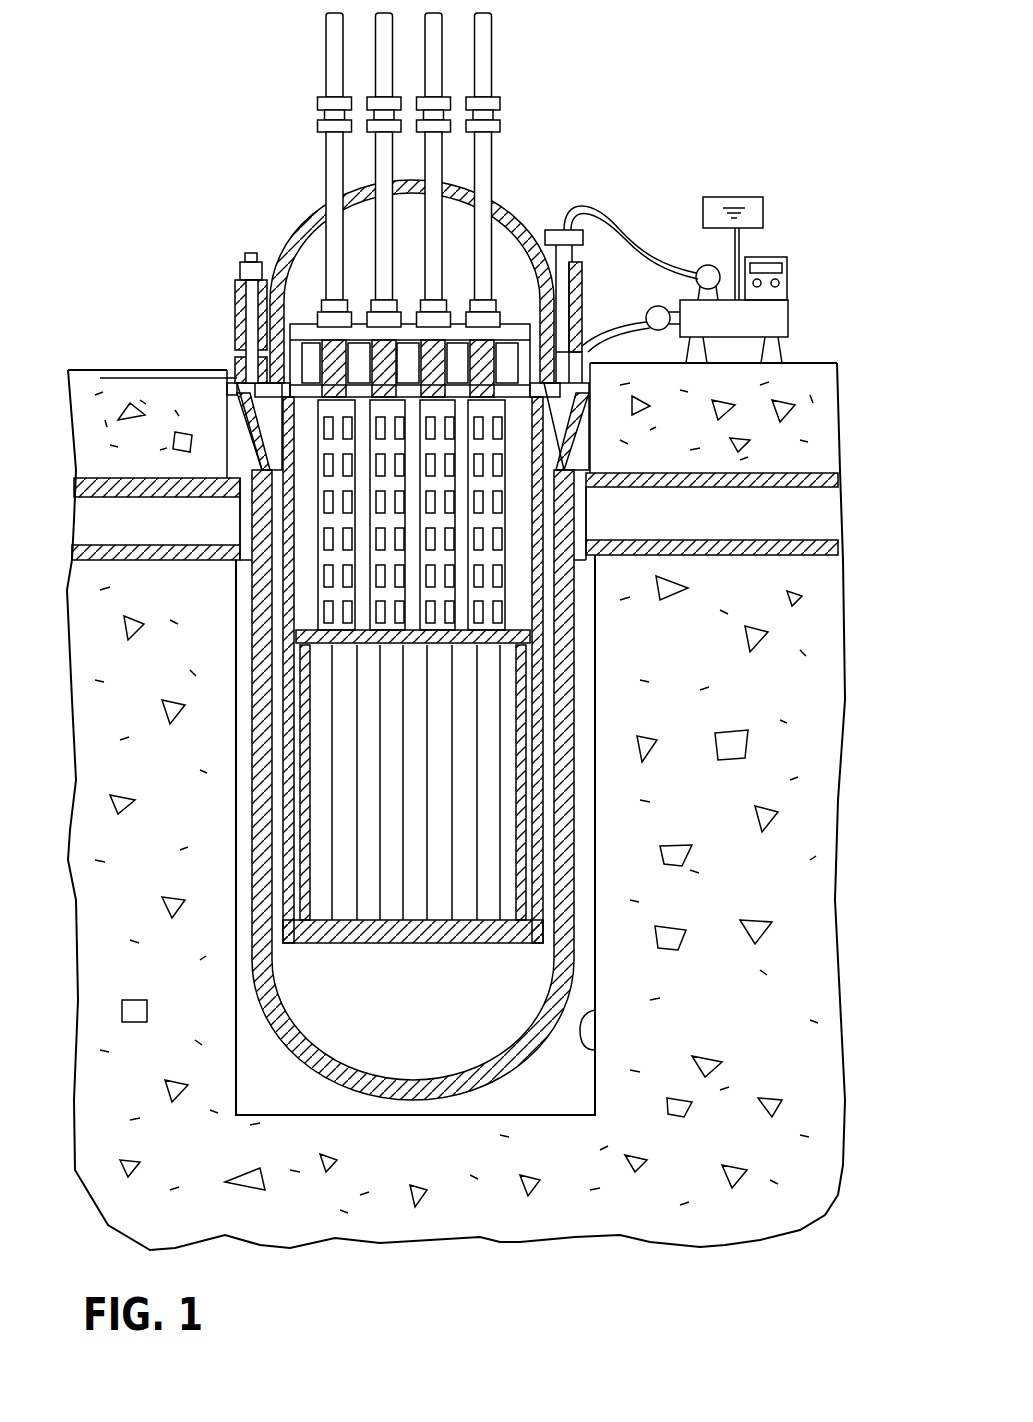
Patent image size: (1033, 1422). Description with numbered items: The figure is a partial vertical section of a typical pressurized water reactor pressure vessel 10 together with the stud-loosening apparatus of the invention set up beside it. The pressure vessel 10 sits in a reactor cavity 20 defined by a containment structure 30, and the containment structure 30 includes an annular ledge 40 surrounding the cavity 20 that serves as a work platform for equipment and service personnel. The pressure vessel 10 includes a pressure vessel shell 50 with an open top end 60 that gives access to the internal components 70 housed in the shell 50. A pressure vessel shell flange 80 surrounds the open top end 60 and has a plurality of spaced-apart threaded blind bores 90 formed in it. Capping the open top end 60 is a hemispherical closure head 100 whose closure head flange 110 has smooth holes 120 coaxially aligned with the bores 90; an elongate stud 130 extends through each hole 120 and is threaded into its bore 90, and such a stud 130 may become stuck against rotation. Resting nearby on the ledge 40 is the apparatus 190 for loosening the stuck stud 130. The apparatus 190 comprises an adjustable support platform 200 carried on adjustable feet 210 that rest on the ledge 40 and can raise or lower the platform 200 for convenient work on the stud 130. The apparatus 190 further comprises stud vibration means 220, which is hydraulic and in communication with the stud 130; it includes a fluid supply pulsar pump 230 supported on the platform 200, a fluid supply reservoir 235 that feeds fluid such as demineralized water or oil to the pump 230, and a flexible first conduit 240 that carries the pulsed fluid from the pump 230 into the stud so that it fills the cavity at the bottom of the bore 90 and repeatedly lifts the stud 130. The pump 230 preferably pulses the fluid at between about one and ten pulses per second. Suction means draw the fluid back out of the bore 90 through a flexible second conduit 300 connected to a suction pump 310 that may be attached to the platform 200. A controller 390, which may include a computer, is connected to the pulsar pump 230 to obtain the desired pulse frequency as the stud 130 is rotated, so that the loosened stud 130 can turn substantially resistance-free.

The nuclear reactor pressure vessel 10 is at (688, 64).
The reactor cavity 20 is at (603, 1040).
The containment structure 30 is at (795, 785).
The annular ledge 40 is at (805, 363).
The pressure vessel shell 50 is at (572, 692).
The open top end 60 is at (235, 338).
The internal components 70 is at (325, 790).
The pressure vessel shell flange 80 is at (247, 383).
The threaded blind bore 90 is at (233, 391).
The closure head 100 is at (302, 232).
The closure head flange 110 is at (246, 275).
The smooth hole 120 is at (236, 298).
The stud 130 is at (582, 283).
The apparatus for loosening stuck stud 190 is at (745, 162).
The adjustable support platform 200 is at (792, 305).
The adjustable feet 210 is at (795, 338).
The stud vibration means 220 is at (652, 162).
The fluid supply pulsar pump 230 is at (702, 263).
The fluid supply reservoir 235 is at (766, 214).
The flexible first conduit 240 is at (588, 195).
The flexible second conduit 300 is at (646, 317).
The suction pump 310 is at (667, 330).
The controller 390 is at (790, 265).